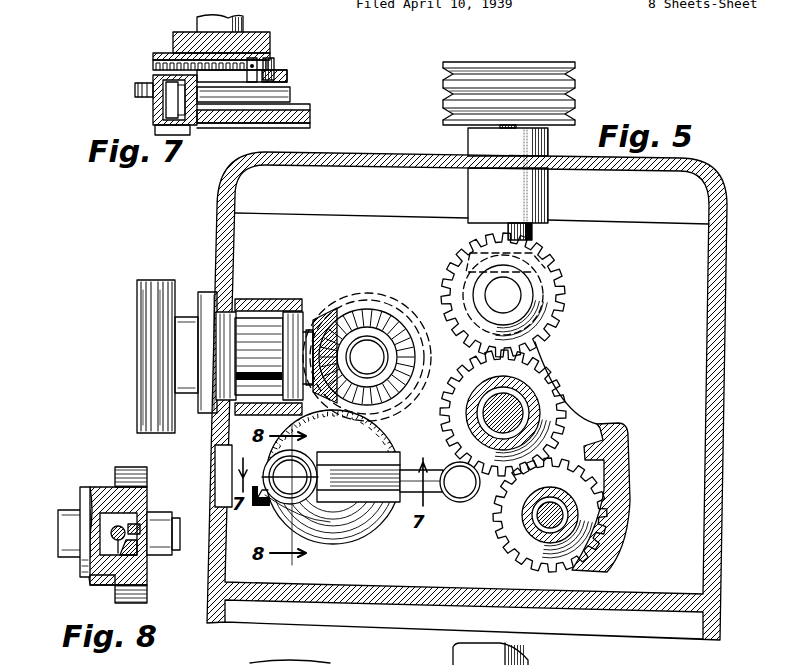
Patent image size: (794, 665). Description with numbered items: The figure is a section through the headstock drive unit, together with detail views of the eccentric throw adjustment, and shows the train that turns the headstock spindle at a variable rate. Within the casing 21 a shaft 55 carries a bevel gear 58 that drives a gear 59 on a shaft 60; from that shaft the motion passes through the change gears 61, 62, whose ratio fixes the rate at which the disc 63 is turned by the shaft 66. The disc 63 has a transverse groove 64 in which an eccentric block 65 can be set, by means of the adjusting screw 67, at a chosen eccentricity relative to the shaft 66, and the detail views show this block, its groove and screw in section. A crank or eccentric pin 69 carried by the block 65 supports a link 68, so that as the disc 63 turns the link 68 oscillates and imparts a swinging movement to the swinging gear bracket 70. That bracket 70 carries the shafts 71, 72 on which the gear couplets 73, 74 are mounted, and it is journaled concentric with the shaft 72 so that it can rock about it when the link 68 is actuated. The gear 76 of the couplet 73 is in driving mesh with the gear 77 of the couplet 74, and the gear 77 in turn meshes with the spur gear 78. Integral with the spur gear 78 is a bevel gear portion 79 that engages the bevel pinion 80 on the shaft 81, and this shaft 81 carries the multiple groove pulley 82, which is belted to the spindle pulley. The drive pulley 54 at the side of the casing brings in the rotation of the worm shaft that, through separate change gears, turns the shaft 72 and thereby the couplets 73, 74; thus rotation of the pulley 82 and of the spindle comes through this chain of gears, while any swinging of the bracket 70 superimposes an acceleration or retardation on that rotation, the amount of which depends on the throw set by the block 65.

In FIG. 5, the gear housing 21 is at (727, 330).
In FIG. 5, the drive pulley 54 is at (130, 348).
In FIG. 5, the shaft 55 is at (255, 345).
In FIG. 5, the bevel gear 58 is at (331, 312).
In FIG. 5, the gear 59 is at (384, 320).
In FIG. 5, the shaft 60 is at (367, 357).
In FIG. 5, the change gear 61 is at (418, 392).
In FIG. 5, the change gear 62 is at (400, 428).
In FIG. 7, the disc 63 is at (290, 82).
In FIG. 5, the disc 63 is at (378, 533).
In FIG. 8, the disc 63 is at (137, 466).
In FIG. 7, the transverse groove 64 is at (291, 95).
In FIG. 5, the transverse groove 64 is at (352, 502).
In FIG. 8, the transverse groove 64 is at (136, 500).
In FIG. 7, the eccentric block 65 is at (158, 58).
In FIG. 5, the eccentric block 65 is at (264, 460).
In FIG. 8, the eccentric block 65 is at (150, 560).
In FIG. 7, the shaft 66 is at (245, 22).
In FIG. 5, the shaft 66 is at (348, 460).
In FIG. 8, the shaft 66 is at (67, 510).
In FIG. 7, the adjusting screw 67 is at (275, 62).
In FIG. 8, the adjusting screw 67 is at (96, 582).
In FIG. 7, the link 68 is at (268, 117).
In FIG. 5, the link 68 is at (409, 498).
In FIG. 8, the link 68 is at (168, 514).
In FIG. 7, the crank or eccentric pin 69 is at (166, 112).
In FIG. 5, the crank or eccentric pin 69 is at (272, 506).
In FIG. 8, the crank or eccentric pin 69 is at (140, 529).
In FIG. 5, the swinging gear bracket 70 is at (589, 427).
In FIG. 5, the shaft 71 is at (565, 517).
In FIG. 5, the shaft 72 is at (521, 397).
In FIG. 5, the gear couplet 73 is at (600, 522).
In FIG. 5, the gear couplet 74 is at (533, 388).
In FIG. 5, the gear 76 is at (590, 489).
In FIG. 5, the gear 77 is at (560, 407).
In FIG. 5, the spur gear 78 is at (562, 299).
In FIG. 5, the bevel gear portion 79 is at (543, 282).
In FIG. 5, the bevel pinion 80 is at (535, 258).
In FIG. 5, the shaft 81 is at (490, 128).
In FIG. 5, the multiple groove pulley 82 is at (565, 66).